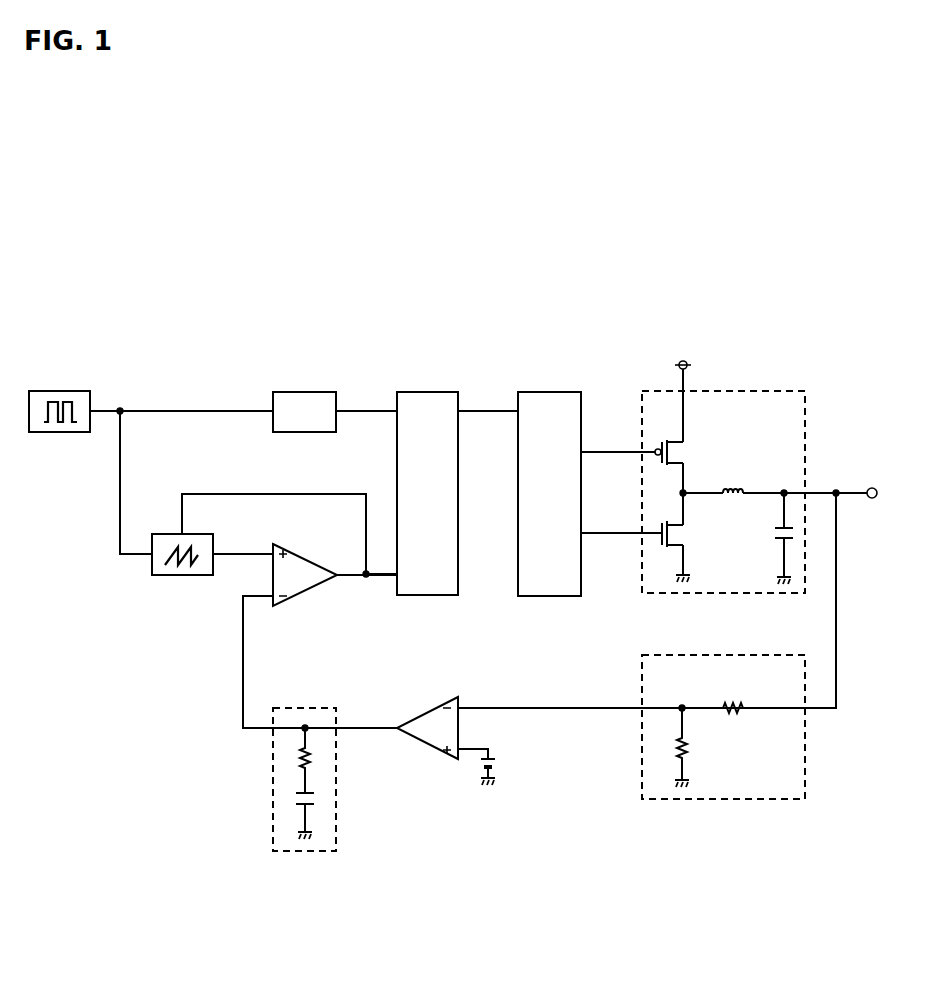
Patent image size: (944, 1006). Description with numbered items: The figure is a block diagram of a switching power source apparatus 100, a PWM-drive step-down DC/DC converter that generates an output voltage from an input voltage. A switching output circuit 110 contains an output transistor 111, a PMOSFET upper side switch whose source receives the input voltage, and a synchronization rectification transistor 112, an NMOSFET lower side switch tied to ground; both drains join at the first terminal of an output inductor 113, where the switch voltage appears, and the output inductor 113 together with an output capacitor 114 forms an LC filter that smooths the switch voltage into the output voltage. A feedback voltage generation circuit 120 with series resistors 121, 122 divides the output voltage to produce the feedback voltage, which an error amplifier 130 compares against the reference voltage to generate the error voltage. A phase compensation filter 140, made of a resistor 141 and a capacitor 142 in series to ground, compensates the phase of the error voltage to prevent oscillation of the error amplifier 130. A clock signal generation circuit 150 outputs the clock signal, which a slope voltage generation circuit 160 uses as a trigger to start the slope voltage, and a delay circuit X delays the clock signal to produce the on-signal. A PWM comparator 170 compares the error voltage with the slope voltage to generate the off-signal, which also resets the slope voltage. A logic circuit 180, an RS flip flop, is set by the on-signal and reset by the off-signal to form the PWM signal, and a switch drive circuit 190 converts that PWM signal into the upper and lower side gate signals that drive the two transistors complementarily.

The switching power source apparatus 100 is at (826, 329).
The switching output circuit 110 is at (745, 390).
The output transistor 111 is at (685, 452).
The synchronization rectification transistor 112 is at (685, 533).
The output inductor 113 is at (745, 488).
The output capacitor 114 is at (776, 535).
The feedback voltage generation circuit 120 is at (726, 653).
The resistor 121 is at (735, 698).
The resistor 122 is at (692, 752).
The error amplifier 130 is at (428, 709).
The phase compensation filter 140 is at (306, 705).
The resistor 141 is at (315, 757).
The capacitor 142 is at (315, 800).
The clock signal generation circuit 150 is at (66, 391).
The slope voltage generation circuit 160 is at (166, 532).
The PWM comparator 170 is at (308, 558).
The logic circuit 180 is at (429, 391).
The switch drive circuit 190 is at (551, 391).
The delay circuit X is at (305, 390).